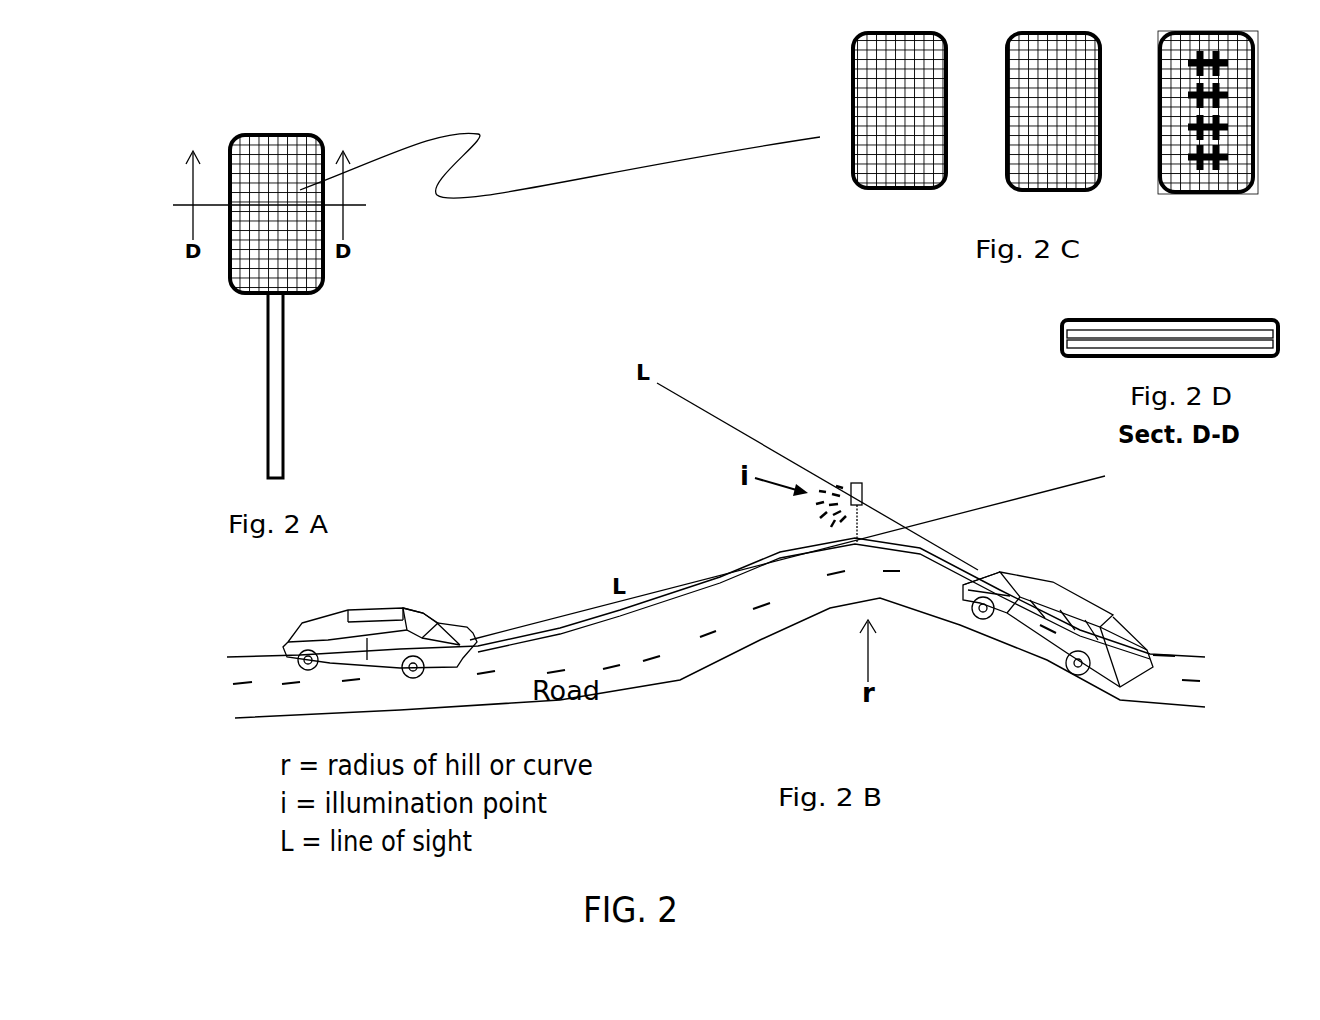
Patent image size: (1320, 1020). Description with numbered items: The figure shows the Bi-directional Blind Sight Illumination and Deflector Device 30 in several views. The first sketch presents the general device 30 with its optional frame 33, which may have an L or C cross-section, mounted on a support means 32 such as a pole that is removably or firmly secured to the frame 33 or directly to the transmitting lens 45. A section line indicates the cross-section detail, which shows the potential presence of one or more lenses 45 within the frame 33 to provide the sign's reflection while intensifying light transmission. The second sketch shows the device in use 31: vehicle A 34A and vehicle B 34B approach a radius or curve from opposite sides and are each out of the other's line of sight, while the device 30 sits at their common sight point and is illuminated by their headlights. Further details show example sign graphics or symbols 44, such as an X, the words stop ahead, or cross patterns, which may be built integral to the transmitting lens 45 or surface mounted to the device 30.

In FIG. 2A, the Bi-directional Blind Sight Illumination and Deflector Device 30 is at (296, 306).
In FIG. 2D, the Bi-directional Blind Sight Illumination and Deflector Device 30 is at (1058, 347).
In FIG. 2B, the Bi-directional Blind Sight Illumination and Deflector Device 30 is at (868, 493).
In FIG. 2B, the device in use 31 is at (890, 432).
In FIG. 2A, the support means 32 is at (265, 378).
In FIG. 2A, the frame 33 is at (325, 255).
In FIG. 2B, the vehicle A 34A is at (1080, 585).
In FIG. 2B, the vehicle B 34B is at (396, 600).
In FIG. 2C, the sign graphics or symbols 44 is at (1190, 128).
In FIG. 2D, the transmitting lens panel 45 is at (1170, 330).